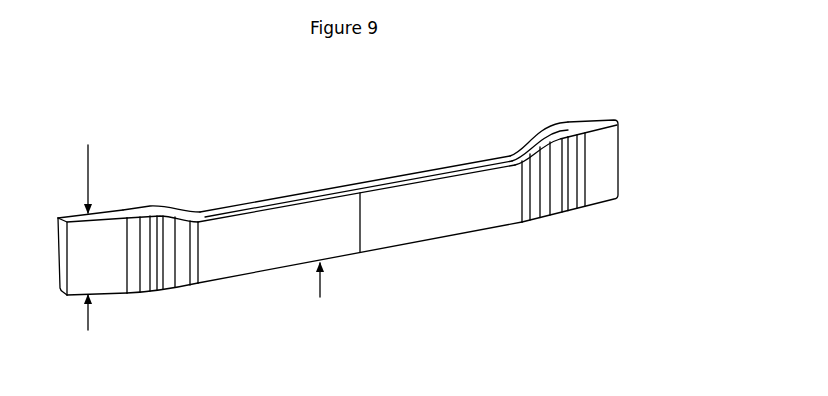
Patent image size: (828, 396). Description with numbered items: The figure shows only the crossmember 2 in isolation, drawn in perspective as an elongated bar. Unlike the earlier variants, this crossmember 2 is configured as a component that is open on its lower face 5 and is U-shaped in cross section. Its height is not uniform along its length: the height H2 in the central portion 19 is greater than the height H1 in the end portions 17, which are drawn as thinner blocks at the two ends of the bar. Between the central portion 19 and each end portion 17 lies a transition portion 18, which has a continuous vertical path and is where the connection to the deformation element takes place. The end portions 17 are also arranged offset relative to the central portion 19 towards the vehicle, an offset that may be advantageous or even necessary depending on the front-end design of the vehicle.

The crossmember 2 is at (359, 221).
The lower face 5 is at (64, 298).
The end portions 17 is at (618, 120).
The transition portion 18 is at (567, 132).
The central portion 19 is at (515, 152).
The height in end portions H1 is at (69, 237).
The height in central portion H2 is at (341, 282).